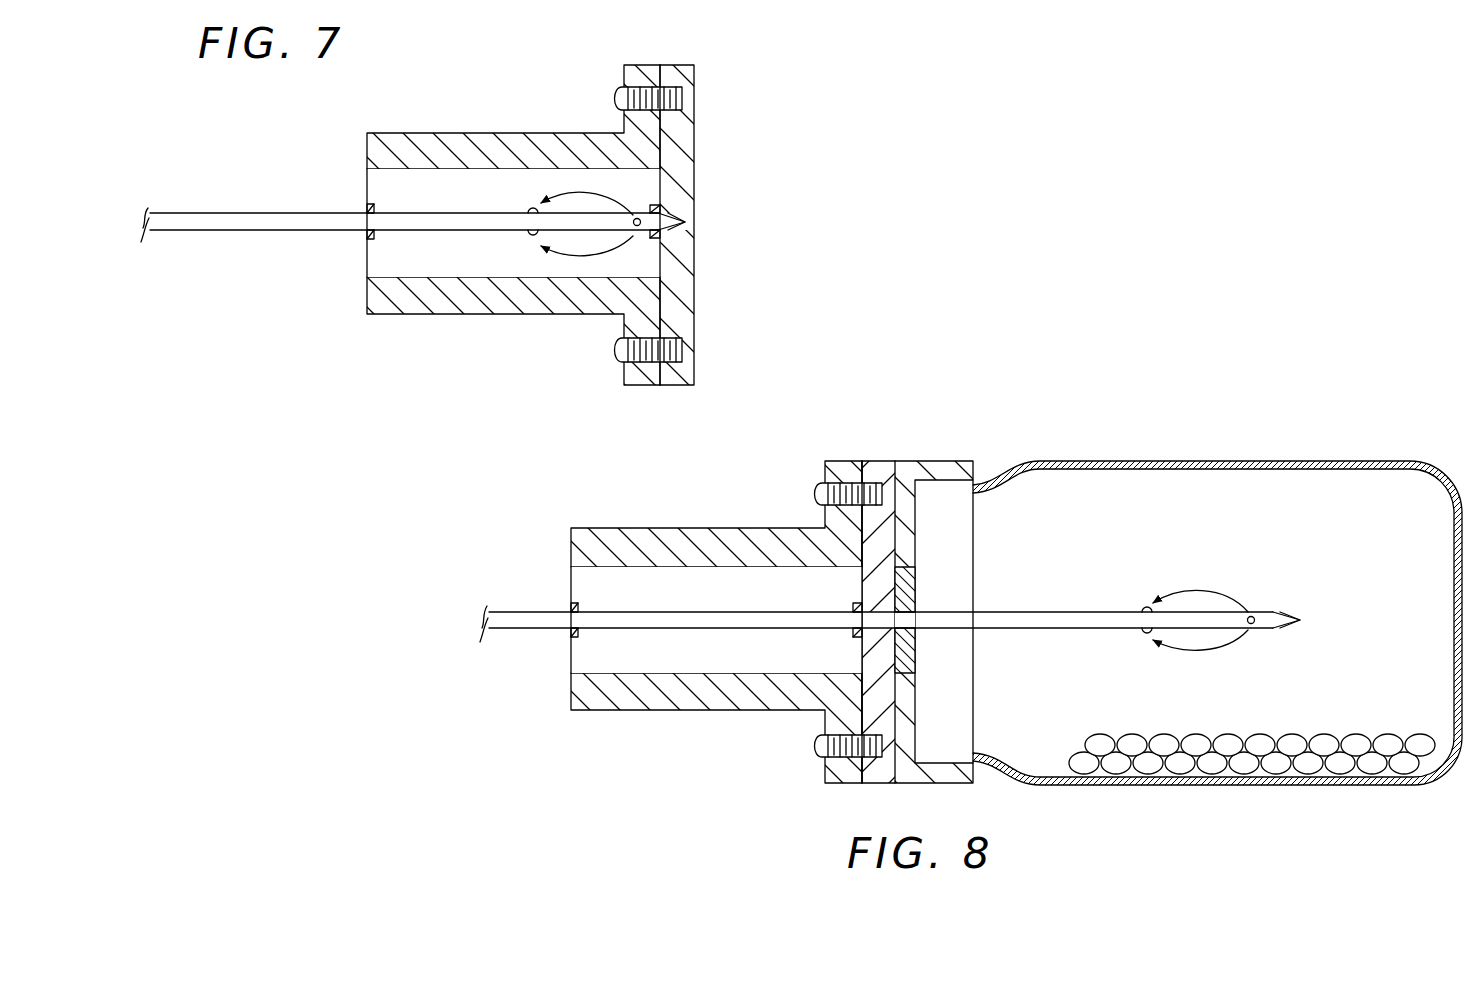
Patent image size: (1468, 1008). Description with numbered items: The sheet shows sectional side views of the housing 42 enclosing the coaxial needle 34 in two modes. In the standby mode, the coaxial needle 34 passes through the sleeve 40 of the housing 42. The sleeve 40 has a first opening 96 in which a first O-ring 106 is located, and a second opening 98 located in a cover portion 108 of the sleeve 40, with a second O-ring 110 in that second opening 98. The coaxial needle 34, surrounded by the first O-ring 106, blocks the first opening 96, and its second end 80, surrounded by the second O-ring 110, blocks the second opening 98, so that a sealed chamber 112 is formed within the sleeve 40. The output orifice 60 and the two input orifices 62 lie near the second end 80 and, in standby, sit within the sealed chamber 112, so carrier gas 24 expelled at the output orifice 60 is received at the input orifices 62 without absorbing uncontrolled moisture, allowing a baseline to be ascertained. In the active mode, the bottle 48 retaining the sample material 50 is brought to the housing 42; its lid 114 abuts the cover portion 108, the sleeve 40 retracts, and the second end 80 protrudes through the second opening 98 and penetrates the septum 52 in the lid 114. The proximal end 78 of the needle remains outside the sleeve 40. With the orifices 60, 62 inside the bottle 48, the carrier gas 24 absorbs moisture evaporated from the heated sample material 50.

In FIG. 7, the carrier gas 24 is at (577, 190).
In FIG. 8, the carrier gas 24 is at (1200, 590).
In FIG. 7, the coaxial needle 34 is at (230, 236).
In FIG. 8, the coaxial needle 34 is at (518, 610).
In FIG. 7, the sleeve 40 is at (452, 133).
In FIG. 8, the sleeve 40 is at (655, 528).
In FIG. 7, the housing 42 is at (800, 344).
In FIG. 8, the housing 42 is at (728, 775).
In FIG. 8, the bottle 48 is at (1215, 461).
In FIG. 8, the sample material 50 is at (1198, 752).
In FIG. 8, the septum 52 is at (917, 592).
In FIG. 7, the output orifice 60 is at (642, 220).
In FIG. 8, the output orifice 60 is at (1252, 625).
In FIG. 7, the input orifice 62 is at (533, 208).
In FIG. 8, the input orifice 62 is at (1147, 607).
In FIG. 7, the proximal end of needle 78 is at (200, 184).
In FIG. 8, the proximal end of needle 78 is at (556, 636).
In FIG. 7, the second end 80 is at (726, 226).
In FIG. 8, the second end 80 is at (1300, 600).
In FIG. 7, the first opening 96 is at (364, 207).
In FIG. 8, the first opening 96 is at (568, 605).
In FIG. 7, the second opening 98 is at (706, 240).
In FIG. 8, the second opening 98 is at (856, 608).
In FIG. 7, the first O-ring 106 is at (370, 240).
In FIG. 8, the first O-ring 106 is at (580, 632).
In FIG. 7, the cover portion 108 is at (700, 132).
In FIG. 8, the cover portion 108 is at (870, 461).
In FIG. 7, the second O-ring 110 is at (657, 244).
In FIG. 8, the second O-ring 110 is at (856, 632).
In FIG. 7, the sealed chamber 112 is at (425, 265).
In FIG. 8, the sealed chamber 112 is at (705, 656).
In FIG. 8, the lid 114 is at (935, 461).